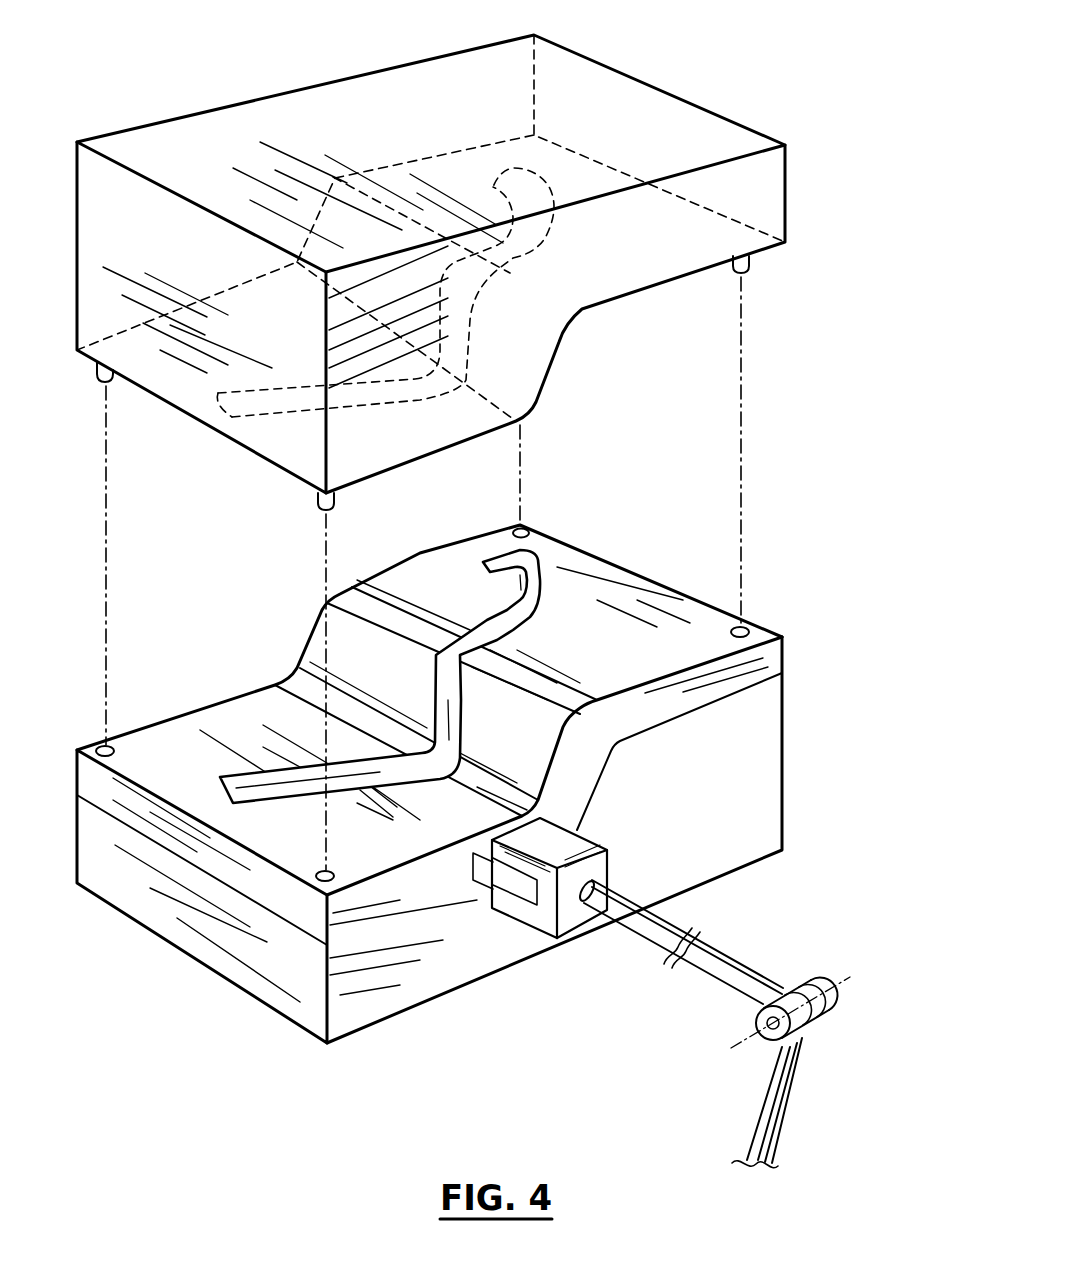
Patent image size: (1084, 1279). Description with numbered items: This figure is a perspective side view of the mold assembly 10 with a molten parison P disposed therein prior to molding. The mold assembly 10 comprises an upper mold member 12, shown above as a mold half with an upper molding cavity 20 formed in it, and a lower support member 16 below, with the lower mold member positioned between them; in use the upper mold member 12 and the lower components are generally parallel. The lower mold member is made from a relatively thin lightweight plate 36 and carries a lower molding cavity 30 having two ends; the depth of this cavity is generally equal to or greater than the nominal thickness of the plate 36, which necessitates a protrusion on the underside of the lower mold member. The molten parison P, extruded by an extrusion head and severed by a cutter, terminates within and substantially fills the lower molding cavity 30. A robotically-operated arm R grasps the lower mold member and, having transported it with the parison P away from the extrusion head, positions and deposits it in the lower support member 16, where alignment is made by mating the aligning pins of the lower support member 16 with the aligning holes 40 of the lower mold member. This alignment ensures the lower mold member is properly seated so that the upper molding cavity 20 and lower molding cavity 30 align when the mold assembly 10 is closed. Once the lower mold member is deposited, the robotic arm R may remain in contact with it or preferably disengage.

The mold assembly 10 is at (806, 353).
The upper mold member 12 is at (786, 202).
The lower support member 16 is at (780, 723).
The upper molding cavity 20 is at (568, 361).
The lower molding cavity 30 is at (542, 597).
The plate 36 is at (780, 665).
The aligning holes 40 is at (522, 528).
The molten parison P is at (487, 620).
The robotically-operated arm R is at (678, 917).